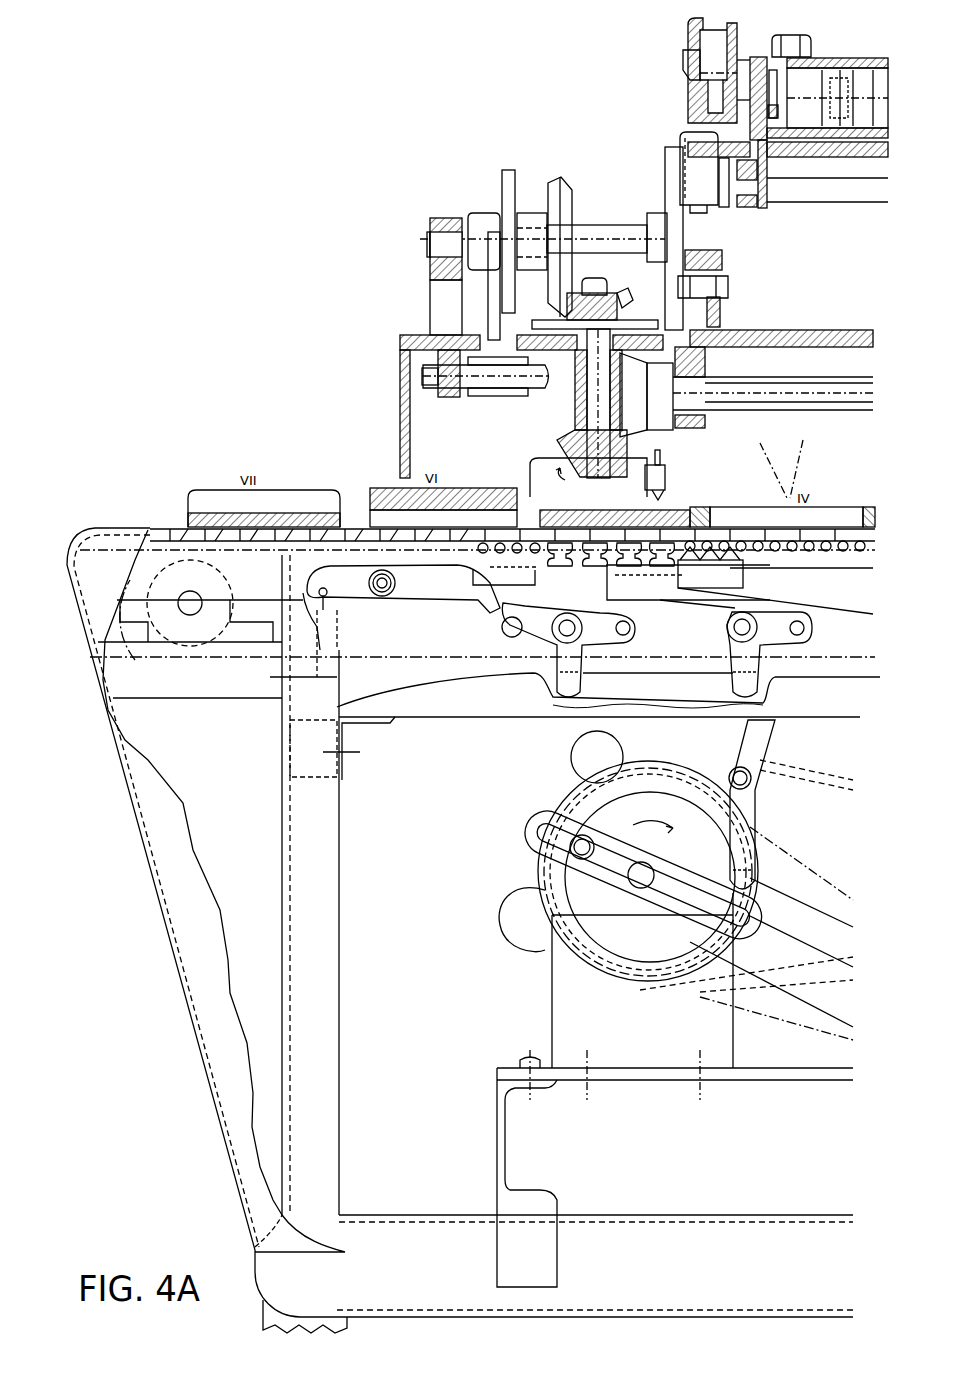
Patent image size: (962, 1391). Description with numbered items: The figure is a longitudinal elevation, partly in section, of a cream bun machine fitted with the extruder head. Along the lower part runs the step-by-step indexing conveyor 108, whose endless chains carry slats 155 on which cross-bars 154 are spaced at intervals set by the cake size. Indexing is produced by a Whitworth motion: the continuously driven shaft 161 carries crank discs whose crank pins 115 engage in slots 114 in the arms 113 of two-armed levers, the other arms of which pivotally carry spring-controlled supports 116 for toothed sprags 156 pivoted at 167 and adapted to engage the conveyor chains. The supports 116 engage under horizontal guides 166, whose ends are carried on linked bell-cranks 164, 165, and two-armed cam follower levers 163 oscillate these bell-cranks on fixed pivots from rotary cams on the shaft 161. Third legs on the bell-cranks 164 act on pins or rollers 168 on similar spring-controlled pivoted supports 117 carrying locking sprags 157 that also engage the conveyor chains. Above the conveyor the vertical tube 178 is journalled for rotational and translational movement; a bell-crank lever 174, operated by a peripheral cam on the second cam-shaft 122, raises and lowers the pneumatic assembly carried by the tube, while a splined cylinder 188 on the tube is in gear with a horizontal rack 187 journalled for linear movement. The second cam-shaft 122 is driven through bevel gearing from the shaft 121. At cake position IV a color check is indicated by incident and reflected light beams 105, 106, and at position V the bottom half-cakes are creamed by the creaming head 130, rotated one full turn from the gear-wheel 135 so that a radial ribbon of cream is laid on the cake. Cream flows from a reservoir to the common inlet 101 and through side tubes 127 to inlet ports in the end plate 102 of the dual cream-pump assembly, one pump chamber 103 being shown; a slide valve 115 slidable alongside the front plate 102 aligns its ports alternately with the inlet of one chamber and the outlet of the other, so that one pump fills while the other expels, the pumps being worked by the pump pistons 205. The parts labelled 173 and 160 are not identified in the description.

The vertical tube 178 is at (666, 60).
The common inlet 101 is at (716, 50).
The end plate 102 is at (748, 68).
The slide valve 115 is at (770, 50).
The pump chamber 103 is at (887, 60).
The pump piston 205 is at (828, 150).
The side tube 127 is at (827, 190).
The splined cylinder 188 is at (690, 132).
The horizontal rack 187 is at (725, 190).
The second cam-shaft 122 is at (588, 240).
The bolt 173 is at (676, 278).
The bell-crank lever 174 is at (705, 312).
The gear-wheel 135 is at (590, 303).
The shaft 121 is at (590, 410).
The incident light beam 105 is at (763, 434).
The reflected light beam 106 is at (812, 434).
The creaming head 130 is at (575, 497).
The slat 155 is at (676, 506).
The cross-bar 154 is at (700, 508).
The indexing conveyor 108 is at (202, 595).
The pivoted support 117 is at (425, 590).
The locking sprag 157 is at (520, 613).
The roller 168 is at (502, 630).
The bell-crank 164 is at (548, 606).
The horizontal guide 166 is at (688, 582).
The toothed sprag 156 is at (710, 567).
The sprag pivot 167 is at (700, 587).
The bell-crank 165 is at (732, 615).
The spring-controlled support 116 is at (873, 611).
The cam follower lever 163 is at (738, 808).
The slotted link 160 is at (553, 838).
The shaft 161 is at (653, 877).
The lever arm 113 is at (805, 900).
The slot 114 is at (677, 903).